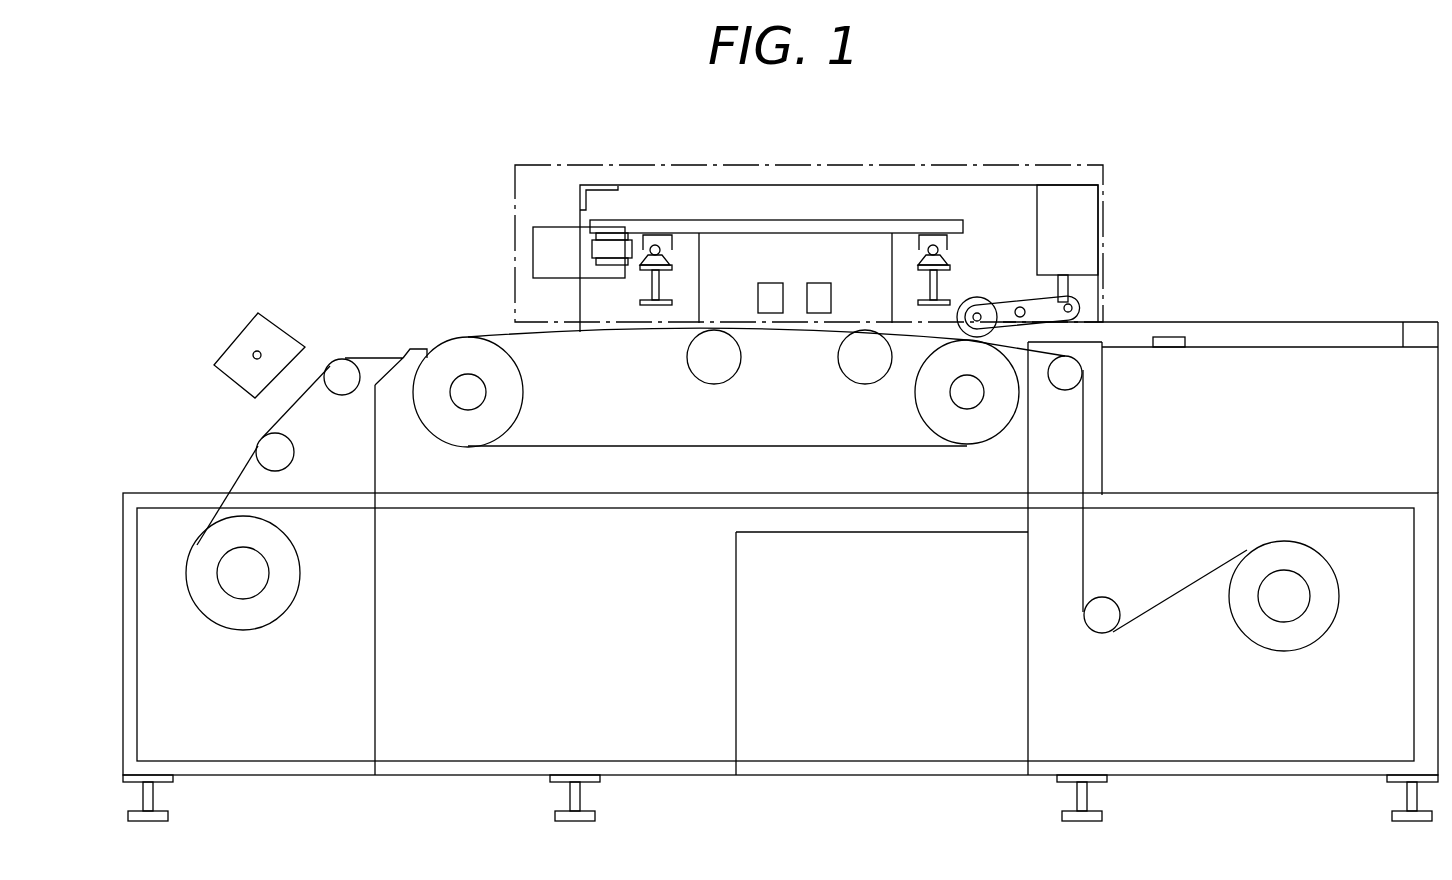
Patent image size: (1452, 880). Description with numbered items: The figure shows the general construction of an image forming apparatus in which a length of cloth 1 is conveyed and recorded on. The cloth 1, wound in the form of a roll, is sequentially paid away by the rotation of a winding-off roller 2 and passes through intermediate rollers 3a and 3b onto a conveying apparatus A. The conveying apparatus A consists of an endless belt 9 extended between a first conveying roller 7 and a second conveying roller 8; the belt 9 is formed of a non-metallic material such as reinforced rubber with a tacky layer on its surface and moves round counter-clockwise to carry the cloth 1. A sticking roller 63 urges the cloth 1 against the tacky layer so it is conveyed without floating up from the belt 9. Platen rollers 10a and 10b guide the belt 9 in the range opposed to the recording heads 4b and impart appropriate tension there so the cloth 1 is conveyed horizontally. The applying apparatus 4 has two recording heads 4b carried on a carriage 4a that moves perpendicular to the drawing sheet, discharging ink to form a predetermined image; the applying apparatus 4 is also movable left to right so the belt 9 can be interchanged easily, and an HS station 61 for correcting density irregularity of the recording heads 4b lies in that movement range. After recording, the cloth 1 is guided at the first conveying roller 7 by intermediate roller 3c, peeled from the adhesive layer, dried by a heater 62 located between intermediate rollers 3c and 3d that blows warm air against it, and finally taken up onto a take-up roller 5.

The cloth 1 is at (1160, 605).
The winding-off roller 2 is at (1297, 603).
The intermediate roller 3a is at (1101, 634).
The intermediate roller 3b is at (1080, 372).
The intermediate roller 3c is at (345, 372).
The intermediate roller 3d is at (290, 452).
The applying apparatus 4 is at (820, 165).
The carriage 4a is at (683, 230).
The recording head 4b is at (815, 313).
The take-up roller 5 is at (255, 583).
The first conveying roller 7 is at (520, 395).
The second conveying roller 8 is at (988, 430).
The endless belt 9 is at (532, 446).
The platen roller 10a is at (866, 374).
The platen roller 10b is at (702, 372).
The HS station 61 is at (1336, 312).
The heater 62 is at (280, 325).
The sticking roller 63 is at (980, 298).
The conveying apparatus A is at (800, 468).